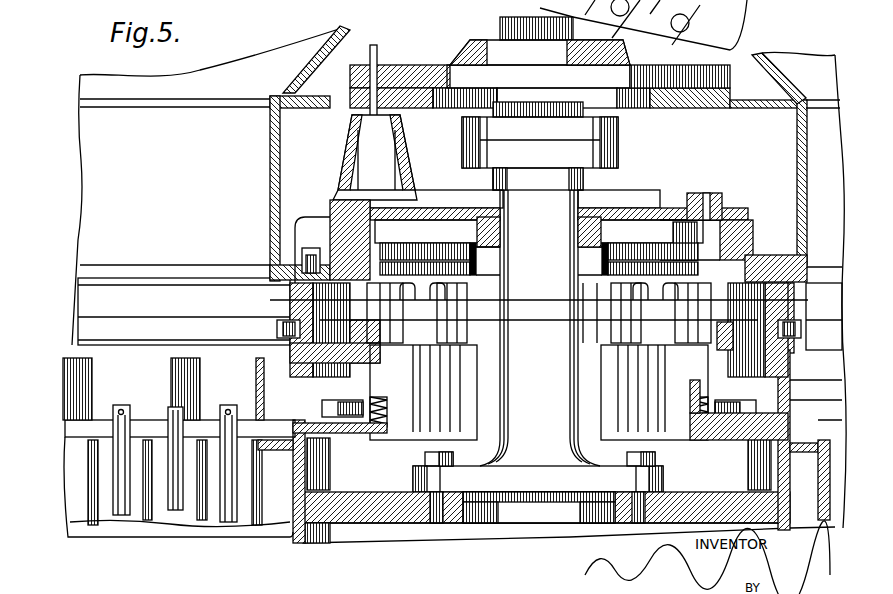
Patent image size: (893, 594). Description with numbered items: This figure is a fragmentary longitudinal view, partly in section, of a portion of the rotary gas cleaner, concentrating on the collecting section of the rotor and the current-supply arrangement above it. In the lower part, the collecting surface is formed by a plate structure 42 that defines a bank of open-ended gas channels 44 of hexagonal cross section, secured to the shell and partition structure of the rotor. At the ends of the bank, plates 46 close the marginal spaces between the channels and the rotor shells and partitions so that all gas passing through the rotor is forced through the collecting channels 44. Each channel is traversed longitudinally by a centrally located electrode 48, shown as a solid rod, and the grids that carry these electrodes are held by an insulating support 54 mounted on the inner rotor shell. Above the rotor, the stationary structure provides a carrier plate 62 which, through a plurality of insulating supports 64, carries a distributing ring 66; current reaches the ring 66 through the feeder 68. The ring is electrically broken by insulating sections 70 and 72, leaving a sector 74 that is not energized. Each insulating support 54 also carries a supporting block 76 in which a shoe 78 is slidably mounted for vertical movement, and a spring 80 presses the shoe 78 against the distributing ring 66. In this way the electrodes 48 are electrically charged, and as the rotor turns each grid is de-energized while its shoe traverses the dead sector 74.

The plate structure 42 is at (197, 497).
The gas channels 44 is at (247, 513).
The plates 46 is at (278, 452).
The electrode 48 is at (123, 513).
The insulating support 54 is at (342, 427).
The carrier plate 62 is at (597, 215).
The insulating supports 64 is at (722, 182).
The distributing ring 66 is at (420, 253).
The feeder 68 is at (380, 50).
The insulating section 70 is at (470, 240).
The insulating section 72 is at (612, 245).
The sector 74 is at (592, 277).
The supporting block 76 is at (450, 397).
The shoe 78 is at (458, 317).
The spring 80 is at (722, 437).